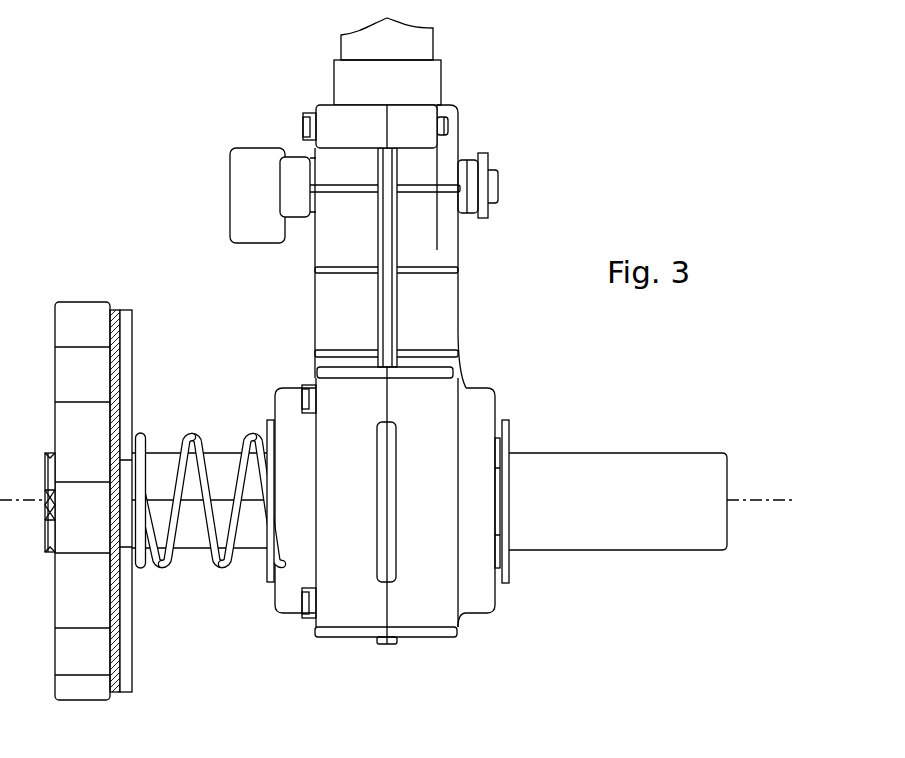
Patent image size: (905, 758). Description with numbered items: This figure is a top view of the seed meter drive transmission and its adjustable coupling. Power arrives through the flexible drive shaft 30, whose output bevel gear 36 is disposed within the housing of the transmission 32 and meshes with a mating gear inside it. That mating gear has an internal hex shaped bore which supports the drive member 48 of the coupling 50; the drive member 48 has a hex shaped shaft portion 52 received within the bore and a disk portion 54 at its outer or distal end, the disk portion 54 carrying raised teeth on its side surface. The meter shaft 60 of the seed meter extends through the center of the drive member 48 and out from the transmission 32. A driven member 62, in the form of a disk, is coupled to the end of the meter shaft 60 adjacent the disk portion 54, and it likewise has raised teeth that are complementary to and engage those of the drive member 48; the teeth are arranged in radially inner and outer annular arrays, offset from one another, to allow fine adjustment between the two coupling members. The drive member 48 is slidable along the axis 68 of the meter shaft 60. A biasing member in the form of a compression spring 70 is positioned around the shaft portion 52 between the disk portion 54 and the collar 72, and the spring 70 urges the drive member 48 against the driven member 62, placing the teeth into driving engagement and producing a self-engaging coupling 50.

The flexible drive shaft 30 is at (427, 43).
The transmission 32 is at (493, 387).
The output bevel gear 36 is at (510, 125).
The drive member 48 is at (308, 327).
The coupling 50 is at (112, 452).
The hex shaped shaft portion 52 is at (197, 530).
The disk portion 54 is at (131, 323).
The meter shaft 60 is at (568, 458).
The driven member 62 is at (85, 303).
The axis 68 is at (748, 500).
The compression spring 70 is at (161, 570).
The collar 72 is at (265, 423).